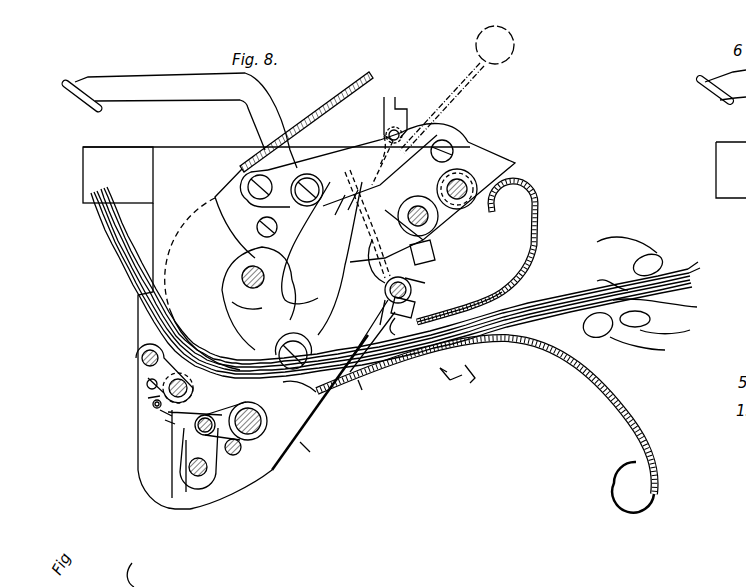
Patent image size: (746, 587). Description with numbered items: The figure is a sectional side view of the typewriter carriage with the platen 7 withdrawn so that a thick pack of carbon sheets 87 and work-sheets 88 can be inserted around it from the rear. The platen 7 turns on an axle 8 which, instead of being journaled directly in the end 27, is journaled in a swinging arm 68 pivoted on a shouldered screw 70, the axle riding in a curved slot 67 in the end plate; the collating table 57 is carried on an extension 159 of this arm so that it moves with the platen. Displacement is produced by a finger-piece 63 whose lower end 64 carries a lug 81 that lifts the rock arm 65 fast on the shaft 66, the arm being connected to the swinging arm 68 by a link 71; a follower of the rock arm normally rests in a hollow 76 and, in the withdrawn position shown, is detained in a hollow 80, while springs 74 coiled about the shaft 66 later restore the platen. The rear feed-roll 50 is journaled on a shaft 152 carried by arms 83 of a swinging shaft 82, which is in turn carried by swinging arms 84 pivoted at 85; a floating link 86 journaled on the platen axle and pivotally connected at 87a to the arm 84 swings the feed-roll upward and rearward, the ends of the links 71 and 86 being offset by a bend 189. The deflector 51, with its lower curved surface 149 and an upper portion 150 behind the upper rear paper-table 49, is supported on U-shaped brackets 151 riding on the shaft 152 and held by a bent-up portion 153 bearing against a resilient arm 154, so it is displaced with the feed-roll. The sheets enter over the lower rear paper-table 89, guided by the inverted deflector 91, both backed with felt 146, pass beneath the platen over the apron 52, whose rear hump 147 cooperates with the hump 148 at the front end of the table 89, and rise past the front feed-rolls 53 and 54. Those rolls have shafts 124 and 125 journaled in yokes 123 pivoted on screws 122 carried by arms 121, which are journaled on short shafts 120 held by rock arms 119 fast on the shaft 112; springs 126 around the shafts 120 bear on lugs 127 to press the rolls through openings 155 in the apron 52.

The finger-piece 63 is at (88, 103).
The upper front collating table 57 is at (330, 108).
The extensions of swinging arms 159 is at (212, 194).
The upper rear paper-table 49 is at (513, 52).
The hollow 80 is at (407, 138).
The hollow 76 is at (397, 128).
The lug 81 is at (388, 136).
The pivot 85 is at (244, 179).
The pivotal connection 87a is at (311, 181).
The link 71 is at (368, 169).
The springs 74 is at (467, 168).
The rock arm 65 is at (426, 141).
The shaft 66 is at (468, 186).
The lower end of finger-piece 64 is at (418, 207).
The swinging shaft 82 is at (436, 222).
The arms 83 is at (436, 252).
The upper portion of deflector 150 is at (367, 224).
The platen 7 is at (202, 284).
The axle 8 is at (253, 262).
The slots 67 is at (224, 300).
The shaft of feed-roll 124 is at (231, 303).
The swinging arm 68 is at (266, 309).
The floating link 86 is at (322, 258).
The swinging arm 84 is at (368, 264).
The bend 189 is at (294, 330).
The shouldered screw 70 is at (279, 354).
The rear feed-roll 50 is at (412, 290).
The shaft 152 is at (412, 296).
The resilient arm 154 is at (426, 286).
The bent-up portion 153 is at (384, 302).
The lower curved surface 149 is at (362, 323).
The U-shaped brackets 151 is at (408, 325).
The felt or fabric backing 146 is at (539, 203).
The inverted table or deflector 91 is at (512, 293).
The work-sheets 88 is at (693, 287).
The carbon sheets 87 is at (690, 270).
The openings 155 is at (147, 345).
The shaft of feed-roll 125 is at (141, 359).
The front feed-roll 54 is at (142, 371).
The yokes 123 is at (148, 387).
The studs or screws 122 is at (148, 398).
The feed-roll-supporting arms 121 is at (153, 406).
The lugs 127 is at (161, 412).
The springs 126 is at (166, 421).
The front feed-roll 53 is at (182, 454).
The apron 52 is at (207, 411).
The short shafts 120 is at (236, 420).
The rock arms 119 is at (196, 440).
The shaft 112 is at (199, 478).
The end 27 is at (251, 474).
The front end hump 148 is at (308, 403).
The hump 147 is at (290, 445).
The deflector 51 is at (358, 381).
The lower rear paper-table 89 is at (447, 367).